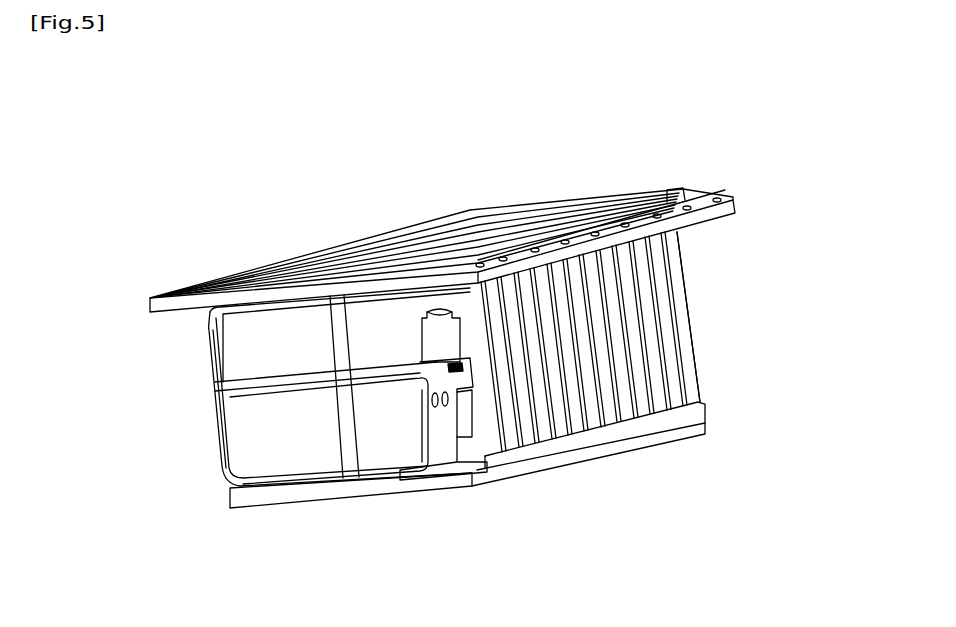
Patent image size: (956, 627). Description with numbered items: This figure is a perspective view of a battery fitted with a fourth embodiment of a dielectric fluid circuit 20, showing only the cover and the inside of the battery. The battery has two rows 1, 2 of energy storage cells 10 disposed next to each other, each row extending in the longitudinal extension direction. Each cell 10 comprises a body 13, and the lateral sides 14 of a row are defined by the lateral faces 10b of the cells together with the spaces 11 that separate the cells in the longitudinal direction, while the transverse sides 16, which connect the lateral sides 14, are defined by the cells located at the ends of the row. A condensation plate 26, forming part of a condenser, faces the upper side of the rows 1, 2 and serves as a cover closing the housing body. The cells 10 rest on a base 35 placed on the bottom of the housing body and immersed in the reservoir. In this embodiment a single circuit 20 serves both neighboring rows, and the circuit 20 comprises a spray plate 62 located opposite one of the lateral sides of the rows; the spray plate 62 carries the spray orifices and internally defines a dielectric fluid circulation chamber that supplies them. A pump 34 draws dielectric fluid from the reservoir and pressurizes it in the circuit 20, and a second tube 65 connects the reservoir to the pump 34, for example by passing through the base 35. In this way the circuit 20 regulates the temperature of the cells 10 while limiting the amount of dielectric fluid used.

The row 1 is at (271, 445).
The row 2 is at (385, 440).
The energy storage cells 10 is at (694, 362).
The body 13 is at (688, 317).
The lateral faces 10b is at (520, 438).
The spaces 11 is at (668, 424).
The lateral sides 14 is at (704, 312).
The transverse sides 16 is at (268, 347).
The dielectric fluid circuit 20 is at (200, 354).
The condensation plate 26 is at (548, 190).
The pump 34 is at (470, 368).
The base 35 is at (443, 477).
The spray plate 62 is at (221, 452).
The second tube 65 is at (385, 368).